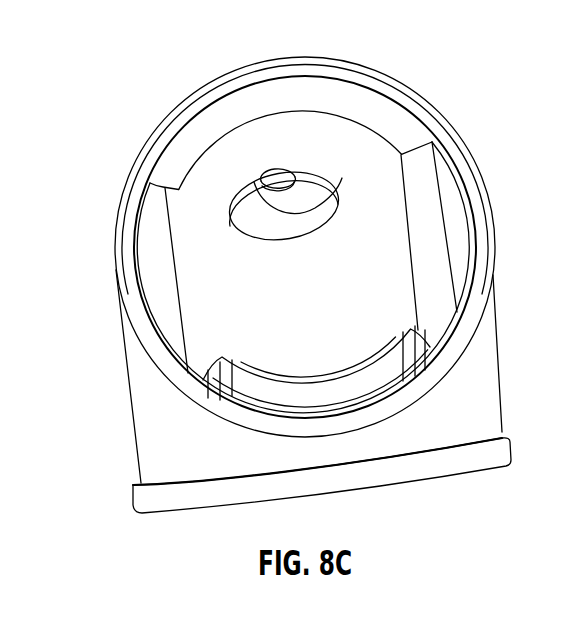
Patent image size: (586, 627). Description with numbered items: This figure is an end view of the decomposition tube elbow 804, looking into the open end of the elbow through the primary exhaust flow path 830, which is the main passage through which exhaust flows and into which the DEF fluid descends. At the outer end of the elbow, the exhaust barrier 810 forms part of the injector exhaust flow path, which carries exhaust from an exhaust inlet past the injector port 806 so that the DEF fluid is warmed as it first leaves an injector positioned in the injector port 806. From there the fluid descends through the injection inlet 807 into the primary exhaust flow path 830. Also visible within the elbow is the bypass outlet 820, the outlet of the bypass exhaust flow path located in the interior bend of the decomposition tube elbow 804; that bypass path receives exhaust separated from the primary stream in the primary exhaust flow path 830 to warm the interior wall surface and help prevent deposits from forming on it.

The decomposition tube elbow 804 is at (134, 71).
The injector port 806 is at (279, 175).
The injection inlet 807 is at (322, 206).
The exhaust barrier 810 is at (395, 111).
The bypass outlet 820 is at (383, 376).
The primary exhaust flow path 830 is at (260, 310).